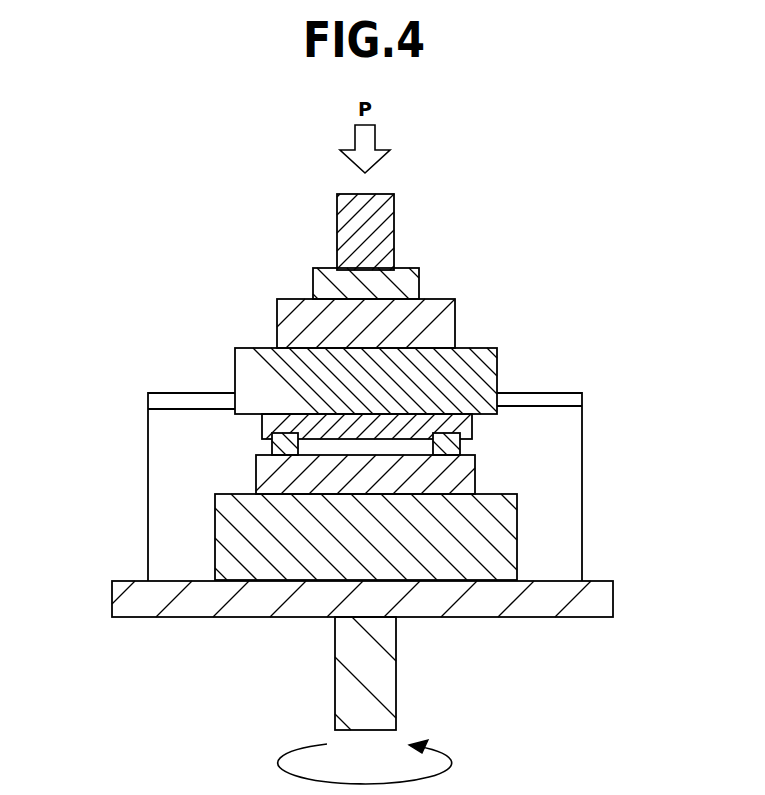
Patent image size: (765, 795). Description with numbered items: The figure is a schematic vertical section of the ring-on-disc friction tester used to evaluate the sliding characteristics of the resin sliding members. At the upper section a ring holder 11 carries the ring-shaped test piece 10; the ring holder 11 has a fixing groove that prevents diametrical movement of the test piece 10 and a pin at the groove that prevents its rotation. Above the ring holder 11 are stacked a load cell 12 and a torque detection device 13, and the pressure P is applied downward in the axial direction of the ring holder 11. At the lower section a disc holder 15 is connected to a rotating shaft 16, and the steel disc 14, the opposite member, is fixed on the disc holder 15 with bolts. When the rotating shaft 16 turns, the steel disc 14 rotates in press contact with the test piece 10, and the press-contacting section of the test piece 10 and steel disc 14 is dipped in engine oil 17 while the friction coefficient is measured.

The ring-shaped test piece 10 is at (450, 444).
The ring holder 11 is at (453, 423).
The load cell 12 is at (408, 288).
The torque detection device 13 is at (443, 330).
The steel disc (opposite member) 14 is at (270, 472).
The disc holder 15 is at (280, 558).
The rotating shaft 16 is at (383, 685).
The engine oil 17 is at (562, 537).